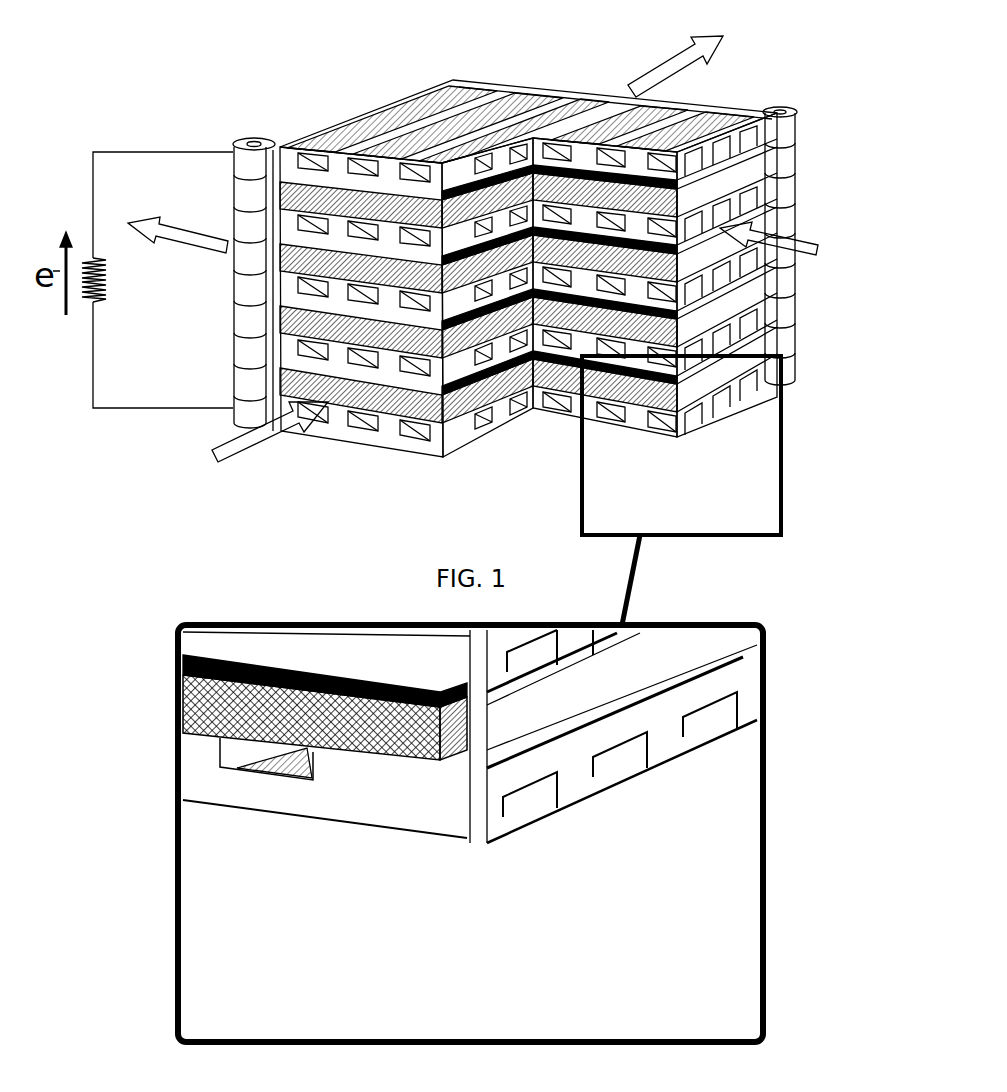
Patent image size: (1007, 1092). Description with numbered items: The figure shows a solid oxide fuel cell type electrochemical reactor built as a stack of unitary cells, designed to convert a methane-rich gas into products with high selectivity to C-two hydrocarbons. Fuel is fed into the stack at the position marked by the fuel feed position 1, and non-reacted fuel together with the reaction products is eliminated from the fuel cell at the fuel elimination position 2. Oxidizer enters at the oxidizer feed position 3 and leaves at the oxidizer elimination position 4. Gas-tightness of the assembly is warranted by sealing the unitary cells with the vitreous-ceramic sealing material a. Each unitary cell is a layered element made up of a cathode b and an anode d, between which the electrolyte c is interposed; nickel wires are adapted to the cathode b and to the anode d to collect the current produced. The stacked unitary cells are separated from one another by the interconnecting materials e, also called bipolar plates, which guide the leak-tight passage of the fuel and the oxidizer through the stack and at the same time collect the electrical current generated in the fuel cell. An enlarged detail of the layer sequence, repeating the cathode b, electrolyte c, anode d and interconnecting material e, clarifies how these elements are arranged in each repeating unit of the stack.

The fuel feed position 1 is at (262, 442).
The fuel elimination position 2 is at (684, 54).
The oxidizer feed position 3 is at (782, 242).
The oxidizer elimination position 4 is at (173, 223).
The vitreous-ceramic sealing material a is at (783, 338).
The cathode b is at (618, 372).
The electrolyte c is at (618, 386).
The anode d is at (625, 397).
The interconnecting material e is at (617, 417).